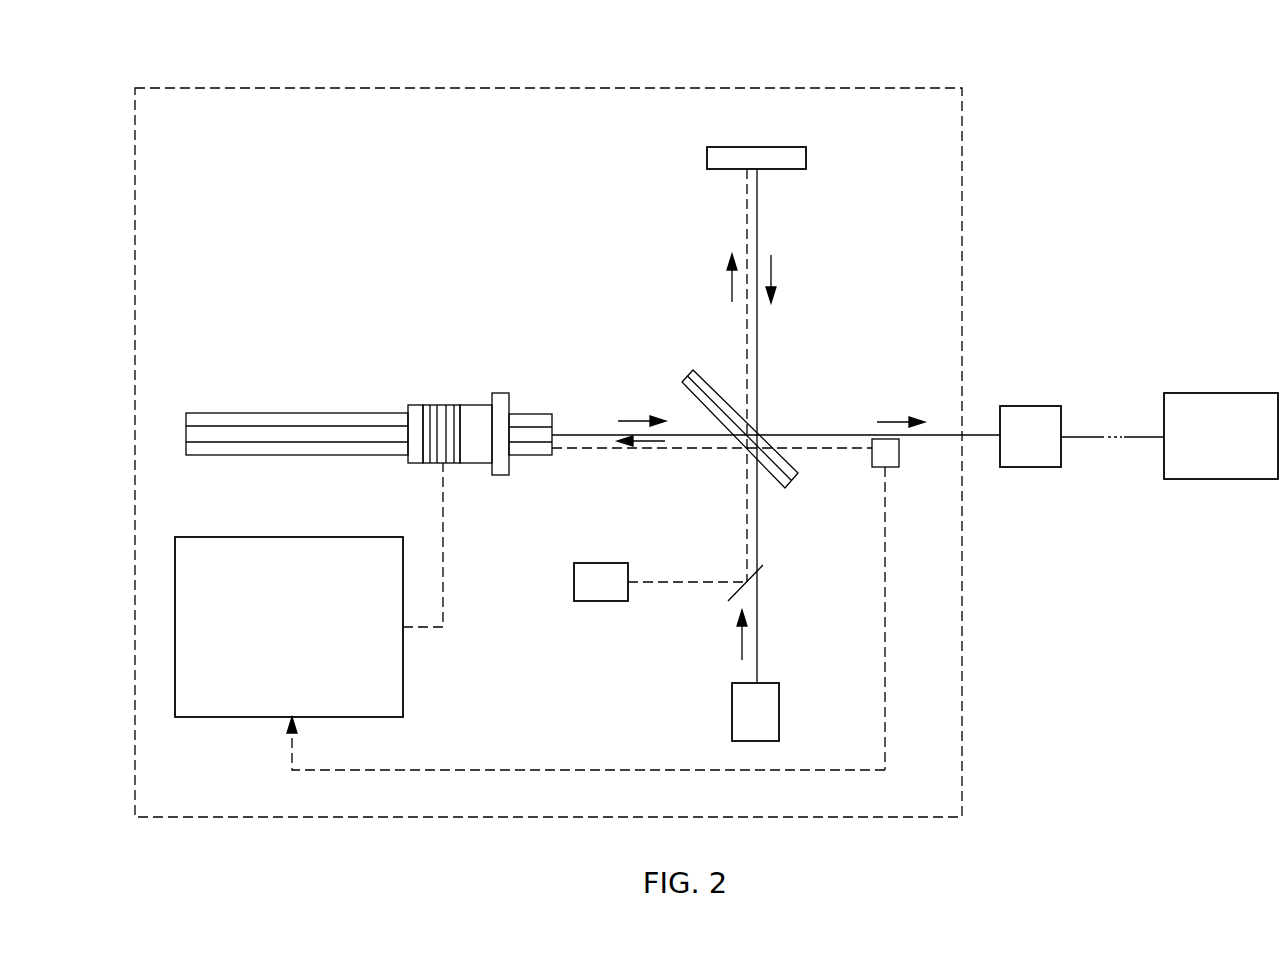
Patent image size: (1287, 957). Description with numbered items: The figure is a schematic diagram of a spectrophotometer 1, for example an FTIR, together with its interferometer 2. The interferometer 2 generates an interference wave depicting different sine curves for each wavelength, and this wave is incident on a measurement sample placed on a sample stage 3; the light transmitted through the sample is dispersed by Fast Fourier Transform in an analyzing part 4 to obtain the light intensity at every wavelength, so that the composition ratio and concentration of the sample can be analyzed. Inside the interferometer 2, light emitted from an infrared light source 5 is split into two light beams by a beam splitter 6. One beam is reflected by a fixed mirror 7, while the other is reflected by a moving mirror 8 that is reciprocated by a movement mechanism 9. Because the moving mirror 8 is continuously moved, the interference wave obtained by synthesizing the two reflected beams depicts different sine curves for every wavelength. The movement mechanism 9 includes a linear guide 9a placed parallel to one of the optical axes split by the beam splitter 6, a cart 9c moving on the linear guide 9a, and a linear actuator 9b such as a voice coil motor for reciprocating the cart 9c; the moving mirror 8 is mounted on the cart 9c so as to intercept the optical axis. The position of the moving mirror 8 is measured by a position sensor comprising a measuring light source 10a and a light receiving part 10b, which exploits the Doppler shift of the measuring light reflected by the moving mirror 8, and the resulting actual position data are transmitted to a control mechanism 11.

The spectrophotometer 1 is at (1170, 126).
The interferometer 2 is at (418, 88).
The sample stage 3 is at (1030, 406).
The analyzing part 4 is at (1222, 393).
The infrared light source 5 is at (732, 713).
The beam splitter 6 is at (688, 378).
The fixed mirror 7 is at (707, 160).
The moving mirror 8 is at (500, 393).
The movement mechanism 9 is at (369, 370).
The linear guide 9a is at (295, 413).
The linear actuator 9b is at (447, 415).
The cart 9c is at (416, 405).
The measuring light source 10a is at (600, 563).
The light receiving part 10b is at (872, 452).
The control mechanism 11 is at (403, 663).